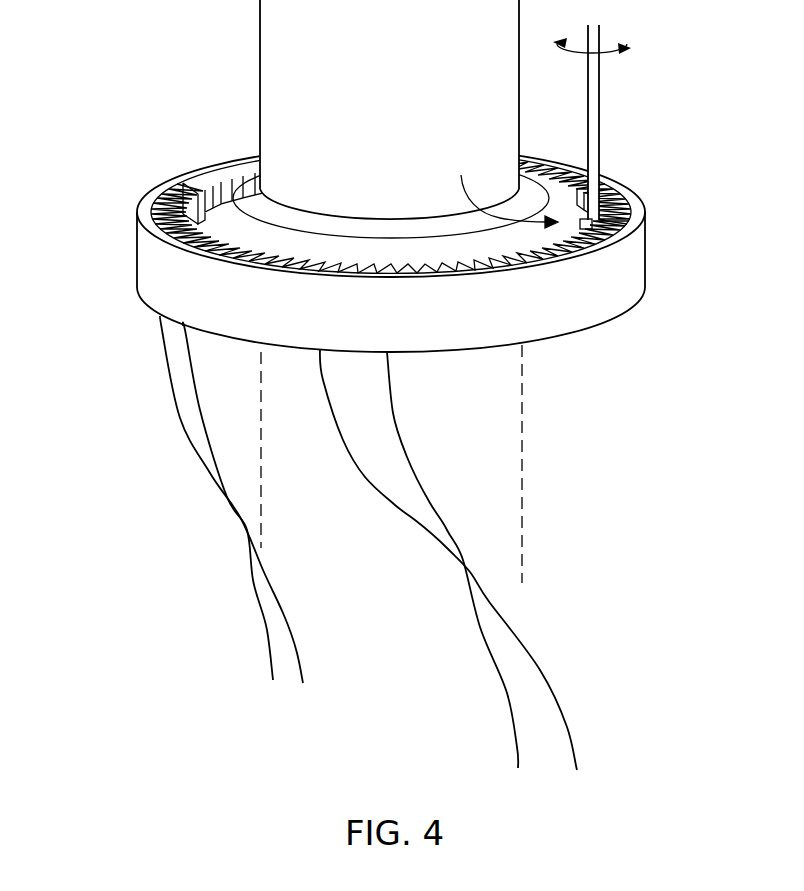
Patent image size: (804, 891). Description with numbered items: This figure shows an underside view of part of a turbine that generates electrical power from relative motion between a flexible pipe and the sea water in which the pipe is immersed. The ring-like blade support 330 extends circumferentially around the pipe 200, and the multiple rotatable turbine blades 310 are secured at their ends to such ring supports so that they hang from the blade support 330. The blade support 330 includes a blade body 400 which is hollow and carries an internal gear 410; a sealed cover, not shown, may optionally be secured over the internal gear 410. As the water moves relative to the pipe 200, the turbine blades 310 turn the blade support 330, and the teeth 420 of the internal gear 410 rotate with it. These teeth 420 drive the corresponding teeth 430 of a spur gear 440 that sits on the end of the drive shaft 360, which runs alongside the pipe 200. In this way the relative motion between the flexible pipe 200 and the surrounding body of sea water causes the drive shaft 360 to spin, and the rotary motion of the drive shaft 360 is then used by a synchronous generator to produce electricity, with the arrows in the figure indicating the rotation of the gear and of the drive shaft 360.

The pipe 200 is at (418, 69).
The turbine blades 310 is at (177, 417).
The blade support 330 is at (618, 273).
The drive shaft 360 is at (597, 113).
The blade body 400 is at (158, 262).
The internal gear 410 is at (183, 183).
The teeth 420 is at (603, 218).
The teeth 430 is at (620, 188).
The spur gear 440 is at (495, 187).